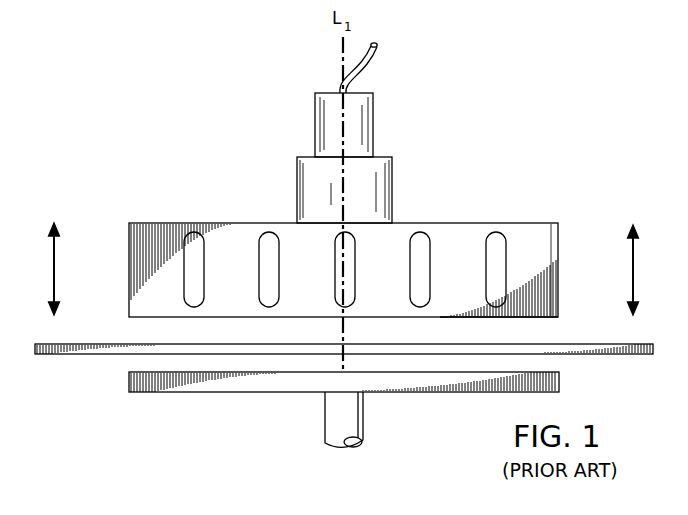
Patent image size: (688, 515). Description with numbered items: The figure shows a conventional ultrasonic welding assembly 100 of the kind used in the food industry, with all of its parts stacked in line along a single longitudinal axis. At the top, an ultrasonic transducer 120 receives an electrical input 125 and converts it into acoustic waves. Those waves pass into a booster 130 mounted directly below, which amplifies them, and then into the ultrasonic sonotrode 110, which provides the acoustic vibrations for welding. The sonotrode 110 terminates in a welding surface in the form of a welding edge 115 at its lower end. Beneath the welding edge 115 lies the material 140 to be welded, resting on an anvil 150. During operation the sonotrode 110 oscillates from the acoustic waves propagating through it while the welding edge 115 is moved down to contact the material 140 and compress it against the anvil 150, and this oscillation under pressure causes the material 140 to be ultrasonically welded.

The ultrasonic welding assembly 100 is at (527, 117).
The ultrasonic sonotrode 110 is at (533, 222).
The welding edge 115 is at (543, 317).
The ultrasonic transducer 120 is at (315, 120).
The electrical input 125 is at (378, 52).
The booster 130 is at (297, 194).
The material 140 is at (103, 344).
The anvil 150 is at (430, 393).